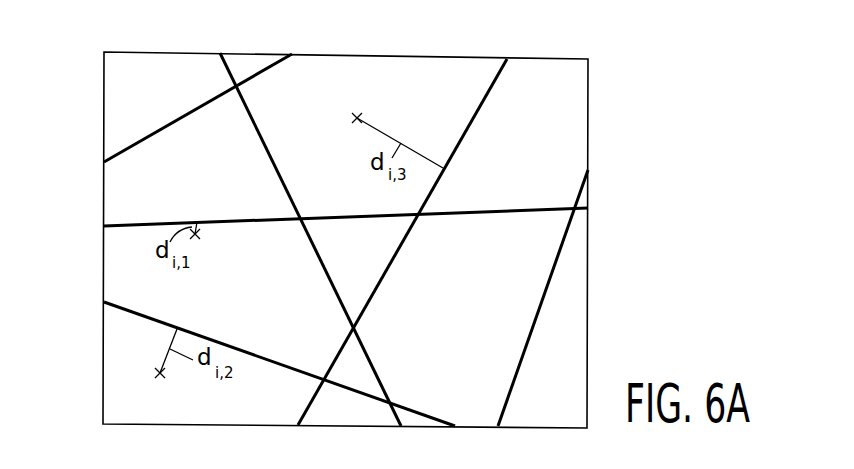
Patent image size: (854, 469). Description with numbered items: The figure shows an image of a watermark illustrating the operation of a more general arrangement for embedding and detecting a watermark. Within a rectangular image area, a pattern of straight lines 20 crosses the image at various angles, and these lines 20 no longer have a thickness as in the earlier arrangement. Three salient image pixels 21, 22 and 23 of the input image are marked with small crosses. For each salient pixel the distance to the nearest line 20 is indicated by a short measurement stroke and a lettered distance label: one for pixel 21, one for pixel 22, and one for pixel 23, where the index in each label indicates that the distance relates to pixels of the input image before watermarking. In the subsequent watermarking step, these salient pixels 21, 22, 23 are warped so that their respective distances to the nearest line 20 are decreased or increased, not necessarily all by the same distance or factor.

The lines 20 is at (220, 53).
The salient image pixel 21 is at (204, 236).
The salient image pixel 22 is at (164, 378).
The salient image pixel 23 is at (358, 114).